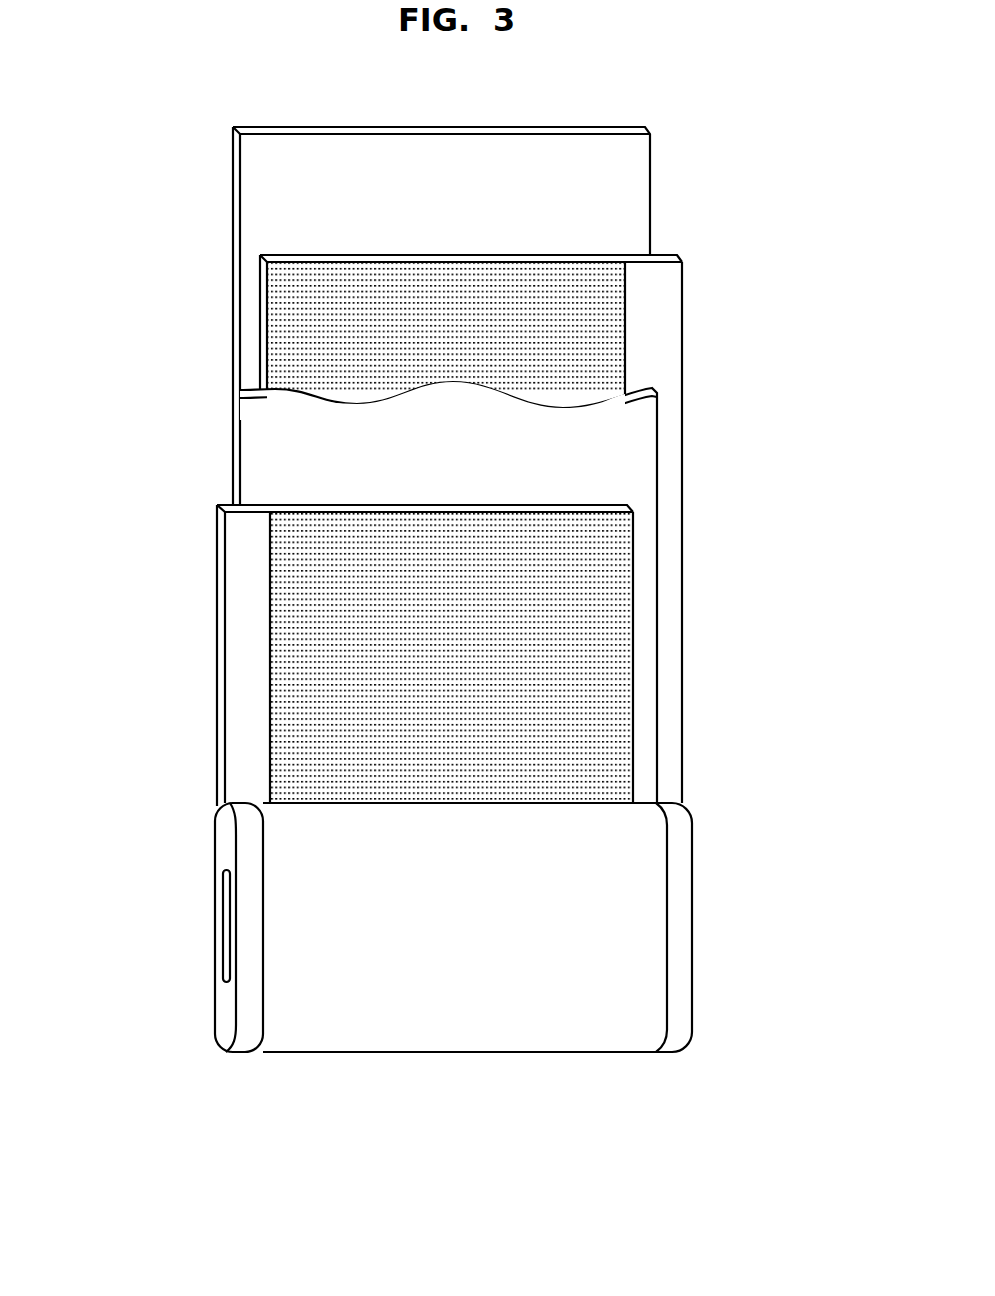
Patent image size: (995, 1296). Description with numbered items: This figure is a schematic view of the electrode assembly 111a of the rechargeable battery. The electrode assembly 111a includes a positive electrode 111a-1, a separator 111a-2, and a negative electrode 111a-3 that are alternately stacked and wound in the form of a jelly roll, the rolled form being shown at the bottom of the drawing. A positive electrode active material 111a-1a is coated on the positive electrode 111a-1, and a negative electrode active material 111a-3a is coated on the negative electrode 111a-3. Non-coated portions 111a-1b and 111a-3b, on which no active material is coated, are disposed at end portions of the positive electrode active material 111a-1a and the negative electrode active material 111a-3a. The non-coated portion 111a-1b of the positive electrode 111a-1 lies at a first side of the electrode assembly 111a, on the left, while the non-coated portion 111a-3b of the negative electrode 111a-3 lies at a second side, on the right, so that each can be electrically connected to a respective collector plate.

The electrode assembly 111a is at (459, 1022).
The positive electrode 111a-1 is at (435, 655).
The positive electrode active material 111a-1a is at (612, 676).
The non-coated portion 111a-1b is at (238, 712).
The separator 111a-2 is at (222, 205).
The negative electrode 111a-3 is at (450, 529).
The negative electrode active material 111a-3a is at (268, 312).
The non-coated portion 111a-3b is at (668, 338).